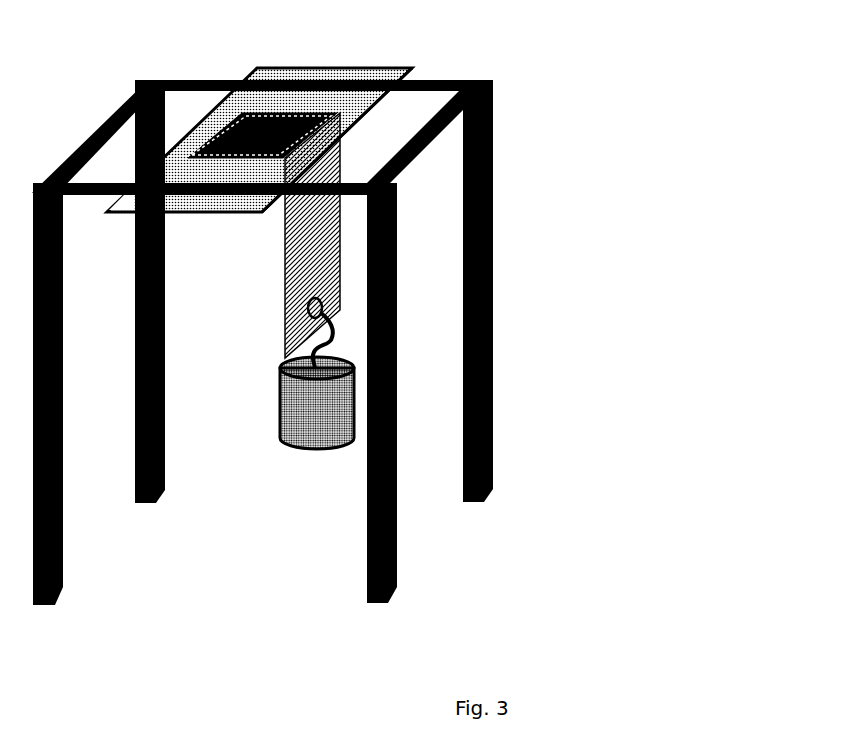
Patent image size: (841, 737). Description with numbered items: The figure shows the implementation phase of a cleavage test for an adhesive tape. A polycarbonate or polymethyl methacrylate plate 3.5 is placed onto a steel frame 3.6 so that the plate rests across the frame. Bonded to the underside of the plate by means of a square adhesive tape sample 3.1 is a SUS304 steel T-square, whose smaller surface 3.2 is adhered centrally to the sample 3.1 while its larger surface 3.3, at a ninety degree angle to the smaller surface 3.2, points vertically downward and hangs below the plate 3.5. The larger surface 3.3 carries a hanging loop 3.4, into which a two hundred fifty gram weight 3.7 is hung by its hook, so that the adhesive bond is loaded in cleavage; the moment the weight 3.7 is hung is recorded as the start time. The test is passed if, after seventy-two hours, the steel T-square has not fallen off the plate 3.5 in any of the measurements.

The adhesive tape sample 3.1 is at (270, 97).
The smaller surface of the steel T-square 3.2 is at (200, 160).
The larger surface of the steel T-square 3.3 is at (310, 228).
The hanging loop 3.4 is at (320, 300).
The polycarbonate or polymethyl methacrylate plate 3.5 is at (340, 70).
The steel frame 3.6 is at (95, 133).
The weight 3.7 is at (300, 403).